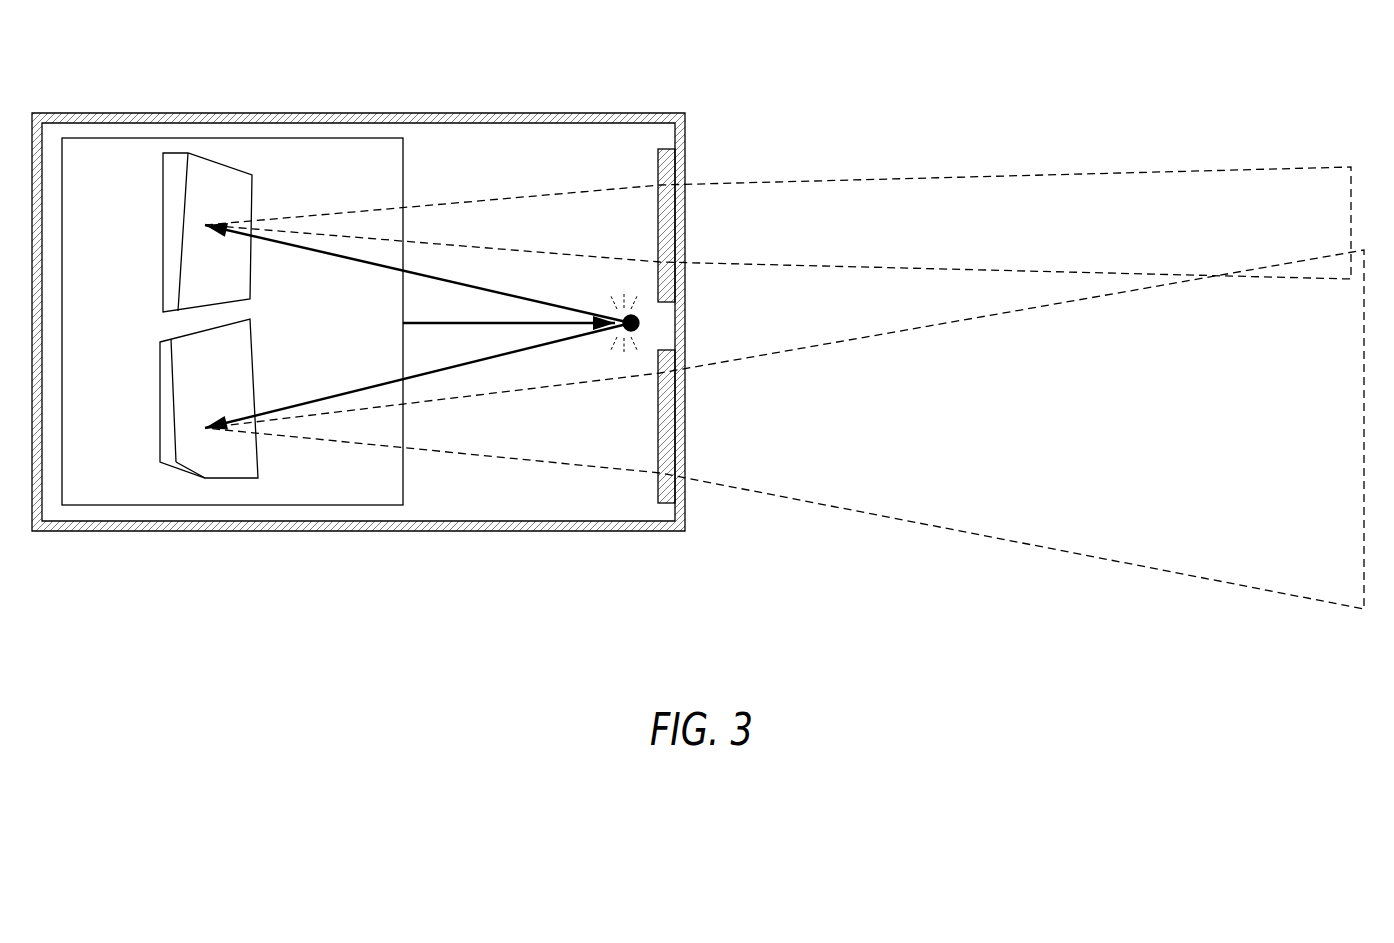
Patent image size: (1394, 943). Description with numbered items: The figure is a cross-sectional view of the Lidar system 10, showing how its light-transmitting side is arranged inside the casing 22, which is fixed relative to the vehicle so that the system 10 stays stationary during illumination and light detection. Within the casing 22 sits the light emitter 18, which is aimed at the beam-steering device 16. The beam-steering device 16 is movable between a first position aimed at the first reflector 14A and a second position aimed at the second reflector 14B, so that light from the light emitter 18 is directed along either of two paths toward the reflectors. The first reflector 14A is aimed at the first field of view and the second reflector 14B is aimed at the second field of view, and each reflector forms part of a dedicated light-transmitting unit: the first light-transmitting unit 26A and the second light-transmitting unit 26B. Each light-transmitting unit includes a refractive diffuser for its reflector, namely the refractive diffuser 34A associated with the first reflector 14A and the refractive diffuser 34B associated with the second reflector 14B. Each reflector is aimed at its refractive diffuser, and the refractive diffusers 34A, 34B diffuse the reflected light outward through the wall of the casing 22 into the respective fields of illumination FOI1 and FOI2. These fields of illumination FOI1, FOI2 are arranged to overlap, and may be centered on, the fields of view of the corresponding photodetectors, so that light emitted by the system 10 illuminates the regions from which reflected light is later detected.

The system 10 is at (781, 52).
The first reflector 14A is at (163, 462).
The second reflector 14B is at (175, 153).
The beam-steering device 16 is at (639, 325).
The light emitter 18 is at (405, 178).
The casing 22 is at (460, 532).
The first light-transmitting unit 26A is at (148, 432).
The second light-transmitting unit 26B is at (148, 215).
The refractive diffuser 34A is at (672, 492).
The refractive diffuser 34B is at (672, 172).
The field of illumination FOI1 is at (1068, 552).
The field of illumination FOI2 is at (1030, 172).